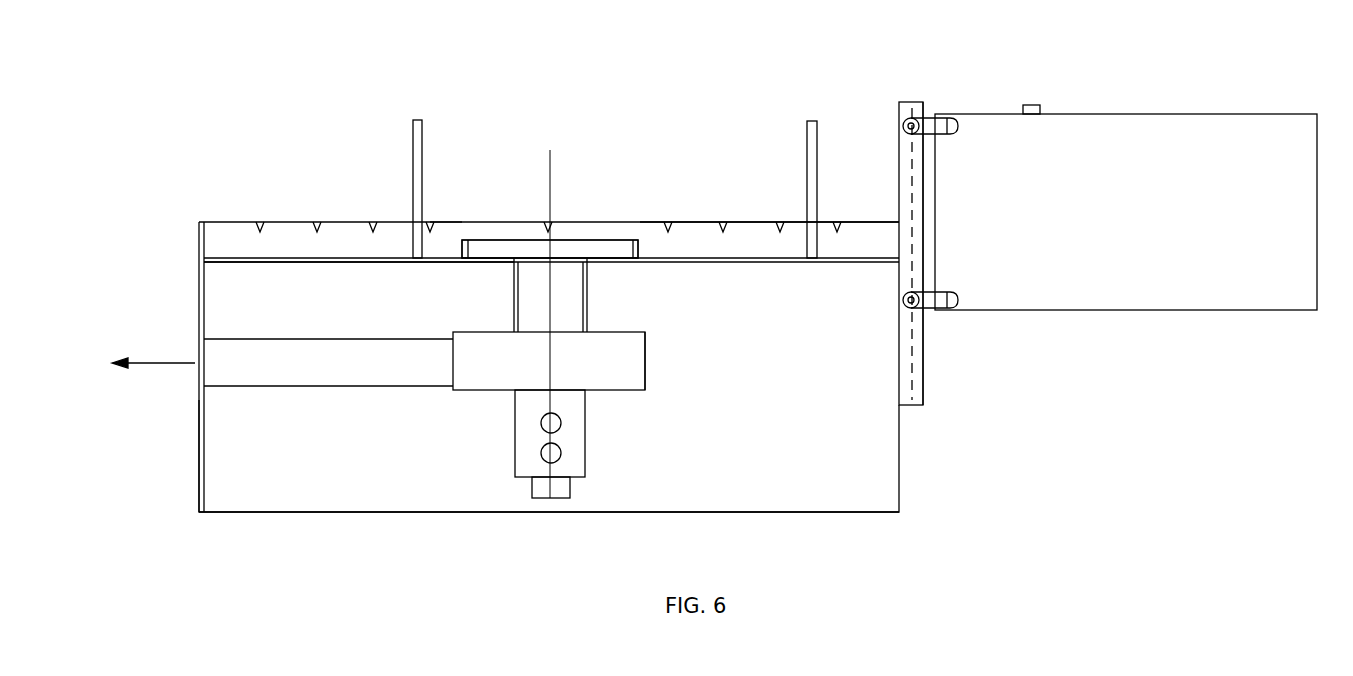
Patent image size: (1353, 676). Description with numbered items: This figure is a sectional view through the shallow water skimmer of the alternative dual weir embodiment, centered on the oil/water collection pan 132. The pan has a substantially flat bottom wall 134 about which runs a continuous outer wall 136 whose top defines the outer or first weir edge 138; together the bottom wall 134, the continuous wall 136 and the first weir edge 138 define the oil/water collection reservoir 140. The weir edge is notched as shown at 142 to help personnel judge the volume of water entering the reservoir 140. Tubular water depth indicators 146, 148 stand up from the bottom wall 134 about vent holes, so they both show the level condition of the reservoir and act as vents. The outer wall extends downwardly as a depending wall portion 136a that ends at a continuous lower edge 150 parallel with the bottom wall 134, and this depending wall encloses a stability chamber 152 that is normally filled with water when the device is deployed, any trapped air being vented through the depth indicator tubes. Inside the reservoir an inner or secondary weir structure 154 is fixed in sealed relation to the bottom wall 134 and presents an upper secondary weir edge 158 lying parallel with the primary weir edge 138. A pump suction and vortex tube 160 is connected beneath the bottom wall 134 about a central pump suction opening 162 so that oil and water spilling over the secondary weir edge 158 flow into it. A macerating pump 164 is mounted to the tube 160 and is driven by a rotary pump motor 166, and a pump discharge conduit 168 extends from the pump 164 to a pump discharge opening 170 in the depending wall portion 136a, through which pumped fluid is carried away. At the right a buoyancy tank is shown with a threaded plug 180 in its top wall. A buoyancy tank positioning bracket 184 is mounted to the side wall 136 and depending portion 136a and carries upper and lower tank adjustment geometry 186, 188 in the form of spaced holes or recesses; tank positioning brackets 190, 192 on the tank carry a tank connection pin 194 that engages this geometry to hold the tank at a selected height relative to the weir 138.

The oil/water collection pan 132 is at (199, 222).
The bottom wall 134 is at (345, 258).
The continuous outer wall 136 is at (204, 241).
The depending wall portion 136a is at (199, 479).
The first weir edge 138 is at (690, 222).
The oil/water collection reservoir 140 is at (455, 238).
The notches 142 is at (260, 222).
The water depth indicator 146 is at (809, 121).
The water depth indicator 148 is at (414, 120).
The continuous lower edge 150 is at (265, 513).
The stability chamber 152 is at (640, 252).
The secondary weir structure 154 is at (359, 280).
The secondary weir edge 158 is at (598, 240).
The pump suction and vortex tube 160 is at (647, 332).
The central pump suction opening 162 is at (501, 295).
The macerating pump 164 is at (647, 350).
The rotary pump motor 166 is at (565, 420).
The pump discharge conduit 168 is at (339, 374).
The pump discharge opening 170 is at (218, 350).
The threaded plug 180 is at (1028, 105).
The buoyancy tank positioning bracket 184 is at (923, 388).
The upper tank adjustment geometry 186 is at (923, 175).
The lower tank adjustment geometry 188 is at (915, 352).
The tank positioning bracket 190 is at (938, 127).
The tank positioning bracket 192 is at (948, 302).
The tank connection pin 194 is at (950, 134).